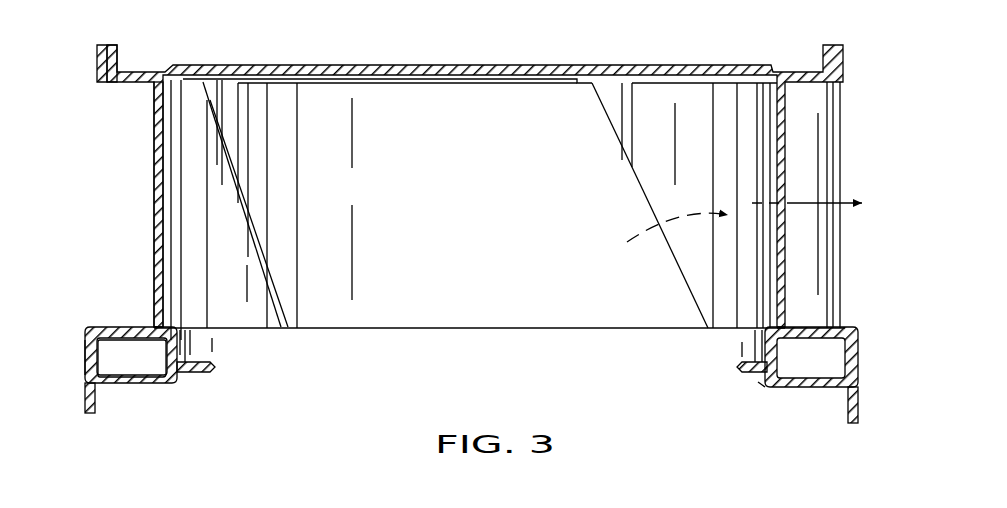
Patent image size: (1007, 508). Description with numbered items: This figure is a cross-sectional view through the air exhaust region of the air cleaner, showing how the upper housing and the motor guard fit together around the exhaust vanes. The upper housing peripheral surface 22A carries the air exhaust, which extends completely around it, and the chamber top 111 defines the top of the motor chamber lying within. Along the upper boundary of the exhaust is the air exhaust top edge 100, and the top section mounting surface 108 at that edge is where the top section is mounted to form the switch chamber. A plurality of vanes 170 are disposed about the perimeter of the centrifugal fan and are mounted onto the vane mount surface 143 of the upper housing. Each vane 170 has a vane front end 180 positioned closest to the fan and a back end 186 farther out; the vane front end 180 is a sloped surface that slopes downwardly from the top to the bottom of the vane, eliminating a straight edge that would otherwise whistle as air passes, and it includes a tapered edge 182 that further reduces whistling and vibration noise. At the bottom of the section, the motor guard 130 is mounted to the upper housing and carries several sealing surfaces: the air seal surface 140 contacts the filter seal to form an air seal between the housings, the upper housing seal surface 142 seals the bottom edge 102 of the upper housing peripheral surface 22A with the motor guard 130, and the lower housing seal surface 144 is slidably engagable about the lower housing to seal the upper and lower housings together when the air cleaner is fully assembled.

The upper housing peripheral surface 22A is at (155, 154).
The air exhaust top edge 100 is at (111, 48).
The bottom edge 102 is at (87, 366).
The top section mounting surface 108 is at (102, 66).
The chamber top 111 is at (530, 92).
The motor guard 130 is at (203, 373).
The air seal surface 140 is at (134, 383).
The upper housing seal surface 142 is at (131, 374).
The vane mount surface 143 is at (805, 327).
The lower housing seal surface 144 is at (97, 402).
The vane 170 is at (157, 183).
The vane front end 180 is at (258, 233).
The tapered edge 182 is at (224, 115).
The back end 186 is at (838, 178).